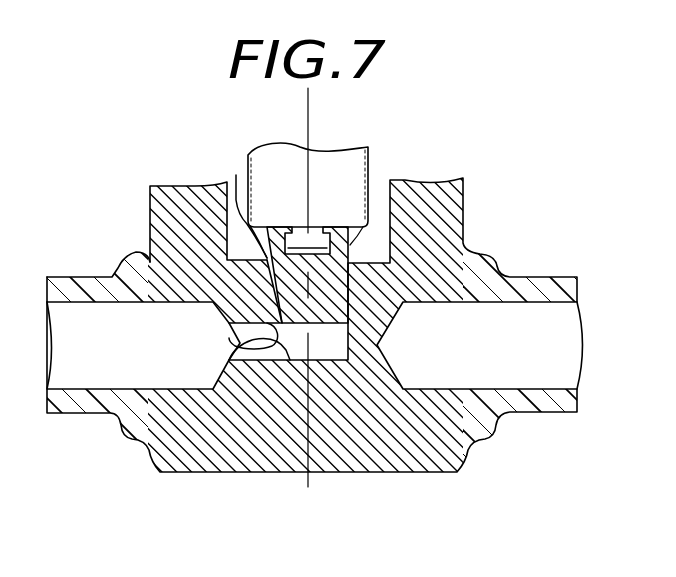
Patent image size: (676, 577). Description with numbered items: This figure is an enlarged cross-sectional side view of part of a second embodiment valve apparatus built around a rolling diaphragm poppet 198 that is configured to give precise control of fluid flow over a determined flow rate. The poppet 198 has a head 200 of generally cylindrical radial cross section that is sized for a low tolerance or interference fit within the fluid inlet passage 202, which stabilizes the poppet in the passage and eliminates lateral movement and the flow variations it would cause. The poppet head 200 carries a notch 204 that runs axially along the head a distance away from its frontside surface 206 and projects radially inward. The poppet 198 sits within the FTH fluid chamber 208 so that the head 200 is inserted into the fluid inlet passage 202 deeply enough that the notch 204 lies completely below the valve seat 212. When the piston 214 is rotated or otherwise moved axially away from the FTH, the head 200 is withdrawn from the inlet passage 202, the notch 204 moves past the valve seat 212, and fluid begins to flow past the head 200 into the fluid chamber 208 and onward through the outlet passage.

The rolling diaphragm poppet 198 is at (375, 243).
The head 200 is at (327, 310).
The fluid inlet passage 202 is at (273, 330).
The notch 204 is at (270, 307).
The frontside surface 206 is at (240, 345).
The FTH fluid chamber 208 is at (239, 249).
The valve seat 212 is at (236, 175).
The piston 214 is at (350, 173).